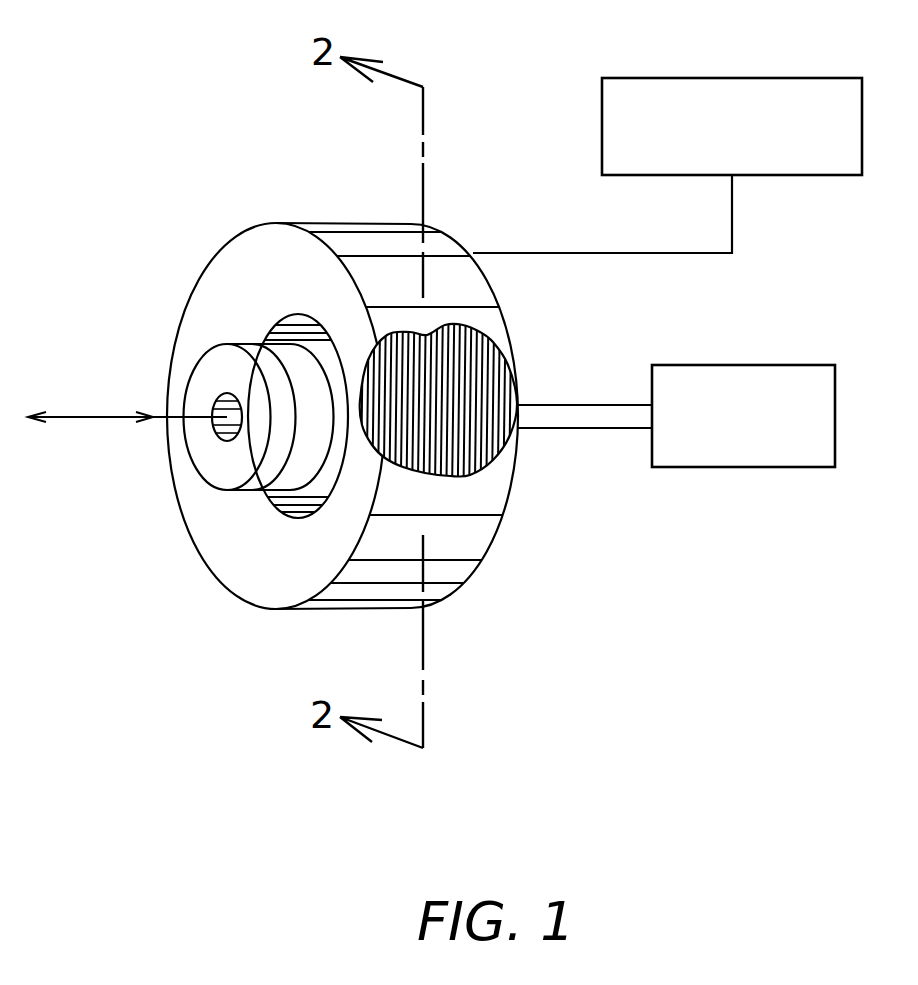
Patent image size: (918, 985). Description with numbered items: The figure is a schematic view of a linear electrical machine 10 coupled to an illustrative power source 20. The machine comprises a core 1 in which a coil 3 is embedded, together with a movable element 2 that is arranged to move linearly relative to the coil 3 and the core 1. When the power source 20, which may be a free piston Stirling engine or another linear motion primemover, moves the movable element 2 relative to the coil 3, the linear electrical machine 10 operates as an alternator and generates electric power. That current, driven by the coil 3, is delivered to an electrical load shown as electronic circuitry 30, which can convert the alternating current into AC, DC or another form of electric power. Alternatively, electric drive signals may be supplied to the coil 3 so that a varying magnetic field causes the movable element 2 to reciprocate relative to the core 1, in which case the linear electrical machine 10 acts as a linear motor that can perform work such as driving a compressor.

The linear electrical machine 10 is at (240, 148).
The core 1 is at (492, 550).
The movable element 2 is at (193, 368).
The coil 3 is at (483, 380).
The power source 20 is at (802, 365).
The electronic circuitry 30 is at (800, 78).